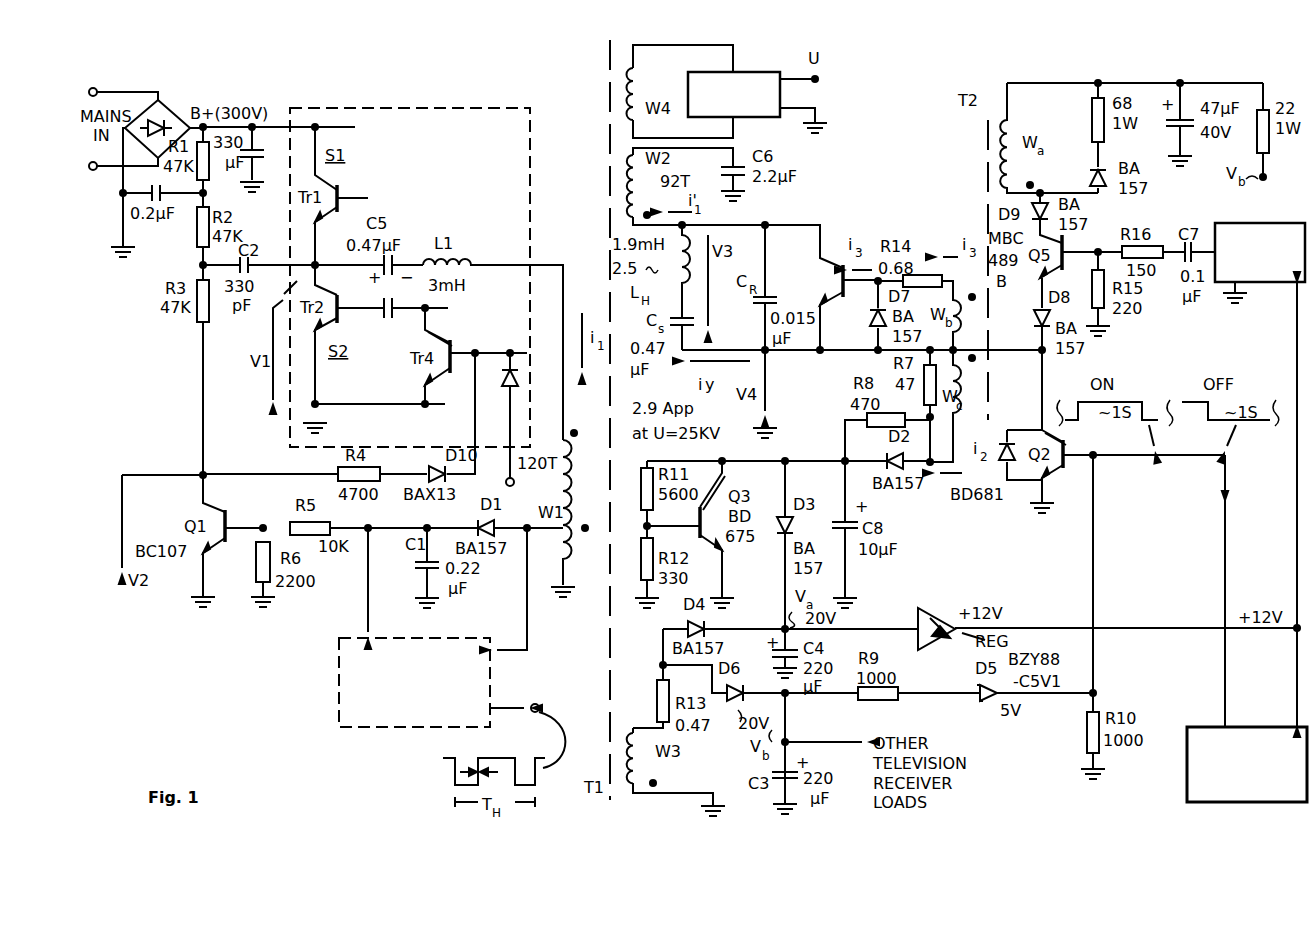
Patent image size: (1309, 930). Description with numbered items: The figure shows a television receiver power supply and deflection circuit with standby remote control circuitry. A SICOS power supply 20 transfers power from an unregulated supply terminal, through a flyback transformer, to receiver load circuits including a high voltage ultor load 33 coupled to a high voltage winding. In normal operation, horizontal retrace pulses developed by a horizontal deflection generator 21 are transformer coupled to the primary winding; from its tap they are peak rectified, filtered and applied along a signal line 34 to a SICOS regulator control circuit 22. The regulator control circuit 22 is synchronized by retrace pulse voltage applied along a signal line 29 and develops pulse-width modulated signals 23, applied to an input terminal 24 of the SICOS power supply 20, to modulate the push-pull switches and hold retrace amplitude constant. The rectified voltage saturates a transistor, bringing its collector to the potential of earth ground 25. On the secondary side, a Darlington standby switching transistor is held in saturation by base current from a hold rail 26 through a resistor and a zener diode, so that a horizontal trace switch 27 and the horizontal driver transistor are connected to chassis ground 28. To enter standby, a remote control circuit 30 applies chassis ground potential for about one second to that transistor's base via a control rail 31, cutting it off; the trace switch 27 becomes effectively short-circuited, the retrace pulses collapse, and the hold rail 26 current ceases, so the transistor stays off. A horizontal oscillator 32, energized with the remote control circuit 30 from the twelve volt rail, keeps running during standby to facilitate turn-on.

The SICOS power supply 20 is at (468, 108).
The horizontal deflection generator 21 is at (920, 285).
The SICOS regulator control circuit 22 is at (339, 690).
The pulse-width modulated signals 23 is at (443, 785).
The input terminal 24 is at (512, 488).
The earth ground 25 is at (140, 255).
The hold rail 26 is at (810, 700).
The horizontal trace switch 27 is at (821, 287).
The chassis ground 28 is at (1040, 512).
The signal line 29 is at (526, 594).
The remote control circuit 30 is at (1186, 786).
The control rail 31 is at (1225, 672).
The horizontal oscillator 32 is at (1276, 222).
The high voltage ultor load 33 is at (722, 70).
The signal line 34 is at (368, 592).